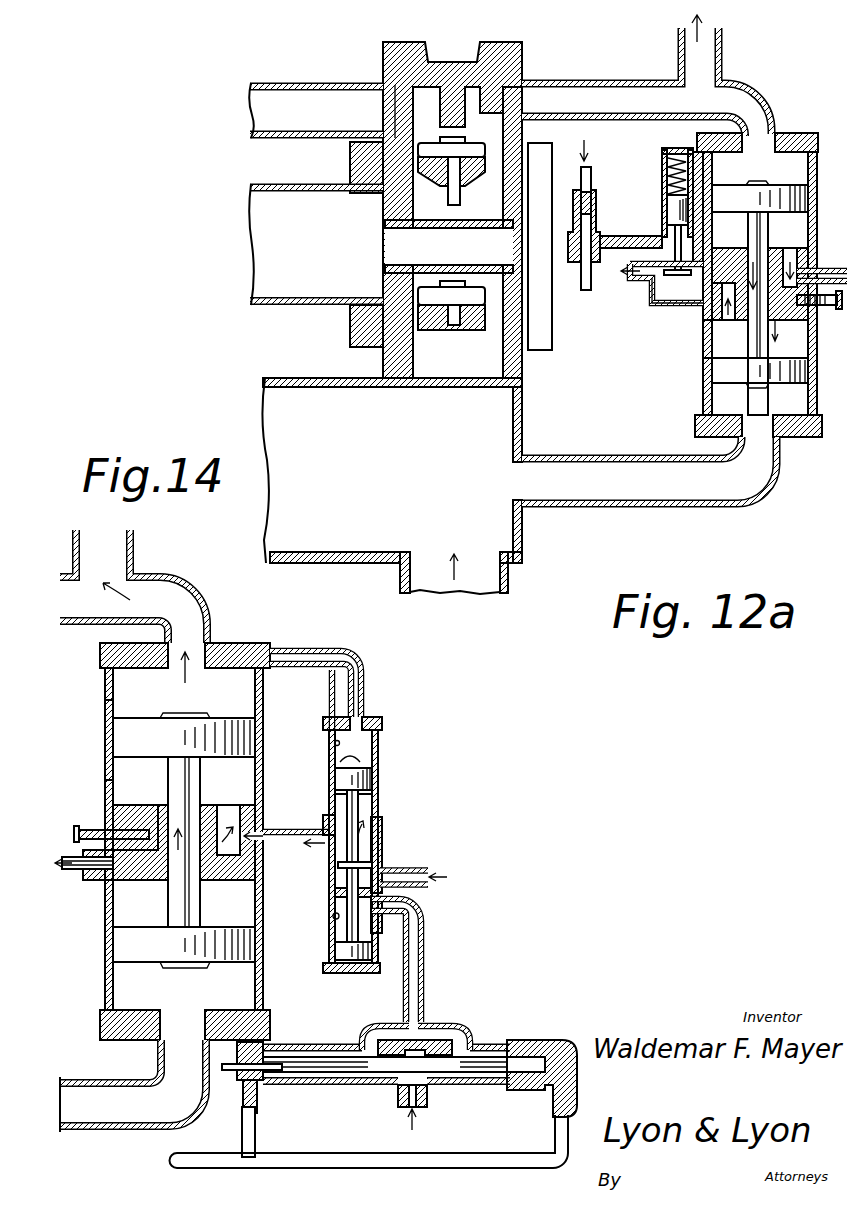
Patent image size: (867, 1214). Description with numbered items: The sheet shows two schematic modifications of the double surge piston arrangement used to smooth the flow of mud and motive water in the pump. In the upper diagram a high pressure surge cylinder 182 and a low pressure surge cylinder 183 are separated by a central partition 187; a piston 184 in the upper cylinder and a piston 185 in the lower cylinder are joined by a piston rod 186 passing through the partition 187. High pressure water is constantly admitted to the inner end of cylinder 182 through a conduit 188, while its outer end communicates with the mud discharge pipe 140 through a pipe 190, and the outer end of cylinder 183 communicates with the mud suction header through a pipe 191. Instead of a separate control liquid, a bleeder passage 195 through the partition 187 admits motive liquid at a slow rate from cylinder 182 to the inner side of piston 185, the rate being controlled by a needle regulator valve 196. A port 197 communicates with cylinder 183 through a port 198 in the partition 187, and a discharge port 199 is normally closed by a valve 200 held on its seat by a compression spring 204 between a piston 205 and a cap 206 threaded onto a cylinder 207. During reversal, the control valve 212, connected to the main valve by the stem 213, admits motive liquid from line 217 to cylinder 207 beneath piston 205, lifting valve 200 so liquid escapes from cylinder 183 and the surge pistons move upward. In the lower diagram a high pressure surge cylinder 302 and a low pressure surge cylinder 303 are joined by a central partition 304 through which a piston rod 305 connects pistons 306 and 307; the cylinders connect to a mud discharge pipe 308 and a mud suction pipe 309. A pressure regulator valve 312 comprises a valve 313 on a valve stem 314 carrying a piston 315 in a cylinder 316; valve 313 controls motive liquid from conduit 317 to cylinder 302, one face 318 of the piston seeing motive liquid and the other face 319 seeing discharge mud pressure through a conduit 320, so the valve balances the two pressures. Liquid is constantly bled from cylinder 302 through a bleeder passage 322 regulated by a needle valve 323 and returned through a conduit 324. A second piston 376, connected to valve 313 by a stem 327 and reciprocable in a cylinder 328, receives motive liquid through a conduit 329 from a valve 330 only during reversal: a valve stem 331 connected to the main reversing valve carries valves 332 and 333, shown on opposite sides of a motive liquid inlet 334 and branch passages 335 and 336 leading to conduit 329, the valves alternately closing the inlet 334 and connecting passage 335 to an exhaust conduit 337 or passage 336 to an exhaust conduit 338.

In FIG. 12a, the mud discharge pipe 140 is at (340, 78).
In FIG. 12a, the high pressure surge cylinder 182 is at (800, 173).
In FIG. 12a, the low pressure surge cylinder 183 is at (718, 398).
In FIG. 12a, the piston 184 is at (805, 196).
In FIG. 12a, the piston 185 is at (718, 372).
In FIG. 12a, the piston rod 186 is at (768, 244).
In FIG. 12a, the partition 187 is at (729, 322).
In FIG. 12a, the conduit 188 is at (815, 262).
In FIG. 12a, the pipe 190 is at (762, 103).
In FIG. 12a, the pipe 191 is at (752, 480).
In FIG. 12a, the bleeder passage 195 is at (790, 335).
In FIG. 12a, the needle regulator valve 196 is at (810, 312).
In FIG. 12a, the port 197 is at (715, 303).
In FIG. 12a, the port 198 is at (712, 340).
In FIG. 12a, the discharge port 199 is at (641, 283).
In FIG. 12a, the valve 200 is at (660, 306).
In FIG. 12a, the compression spring 204 is at (666, 161).
In FIG. 12a, the piston 205 is at (668, 206).
In FIG. 12a, the cap 206 is at (673, 147).
In FIG. 12a, the cylinder 207 is at (662, 181).
In FIG. 12a, the control valve 212 is at (566, 207).
In FIG. 12a, the stem 213 is at (587, 292).
In FIG. 12a, the line 217 is at (592, 178).
In FIG. 14, the high pressure surge cylinder 302 is at (113, 747).
In FIG. 14, the low pressure surge cylinder 303 is at (253, 904).
In FIG. 14, the central partition 304 is at (218, 803).
In FIG. 14, the piston rod 305 is at (176, 781).
In FIG. 14, the piston 306 is at (218, 718).
In FIG. 14, the piston 307 is at (122, 947).
In FIG. 14, the mud discharge pipe 308 is at (158, 580).
In FIG. 14, the mud suction pipe 309 is at (135, 1118).
In FIG. 14, the pressure regulator valve 312 is at (391, 824).
In FIG. 14, the valve 313 is at (338, 870).
In FIG. 14, the valve stem 314 is at (347, 815).
In FIG. 14, the piston 315 is at (336, 780).
In FIG. 14, the cylinder 316 is at (334, 744).
In FIG. 14, the conduit 317 is at (393, 866).
In FIG. 14, the face 318 is at (338, 794).
In FIG. 14, the face 319 is at (334, 761).
In FIG. 14, the conduit 320 is at (352, 654).
In FIG. 14, the bleeder passage 322 is at (135, 802).
In FIG. 14, the needle valve 323 is at (135, 828).
In FIG. 14, the conduit 324 is at (90, 872).
In FIG. 14, the stem 327 is at (336, 889).
In FIG. 14, the cylinder 328 is at (333, 914).
In FIG. 14, the conduit 329 is at (425, 949).
In FIG. 14, the valve 330 is at (478, 1037).
In FIG. 14, the valve stem 331 is at (280, 1062).
In FIG. 14, the valve 332 is at (326, 1056).
In FIG. 14, the valve 333 is at (524, 1048).
In FIG. 14, the motive liquid inlet 334 is at (428, 1099).
In FIG. 14, the branch passage 335 is at (371, 1029).
In FIG. 14, the branch passage 336 is at (435, 1040).
In FIG. 14, the exhaust conduit 337 is at (256, 1134).
In FIG. 14, the exhaust conduit 338 is at (553, 1127).
In FIG. 14, the piston 376 is at (335, 949).